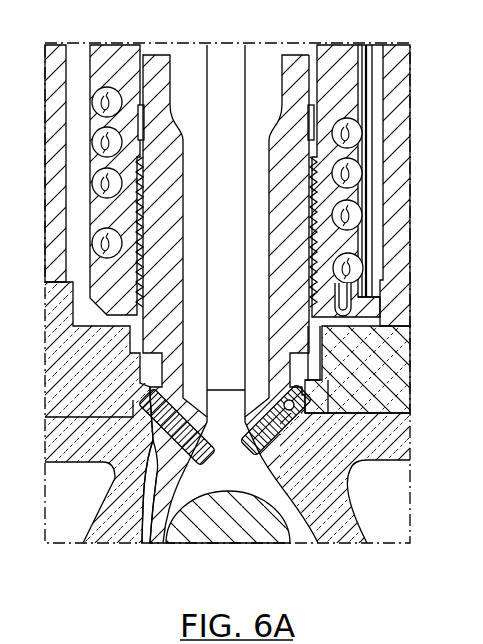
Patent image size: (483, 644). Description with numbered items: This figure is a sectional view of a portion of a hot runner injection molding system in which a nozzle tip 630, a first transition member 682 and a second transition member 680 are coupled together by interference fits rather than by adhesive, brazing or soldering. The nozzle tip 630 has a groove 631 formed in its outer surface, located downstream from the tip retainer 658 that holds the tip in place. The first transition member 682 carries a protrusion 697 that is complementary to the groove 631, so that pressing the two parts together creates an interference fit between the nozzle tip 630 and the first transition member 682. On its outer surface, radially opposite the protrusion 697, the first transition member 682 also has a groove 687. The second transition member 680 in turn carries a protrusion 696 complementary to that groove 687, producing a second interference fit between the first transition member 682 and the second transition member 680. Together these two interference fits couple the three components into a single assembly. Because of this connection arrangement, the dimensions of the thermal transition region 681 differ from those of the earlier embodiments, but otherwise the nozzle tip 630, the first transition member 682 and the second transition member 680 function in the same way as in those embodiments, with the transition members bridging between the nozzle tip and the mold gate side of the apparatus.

The nozzle tip 630 is at (288, 292).
The tip retainer 658 is at (318, 352).
The groove 631 is at (302, 382).
The groove 687 is at (296, 400).
The first transition member 682 is at (292, 408).
The second transition member 680 is at (285, 447).
The thermal transition region 681 is at (128, 425).
The protrusion 696 is at (137, 420).
The protrusion 697 is at (172, 436).